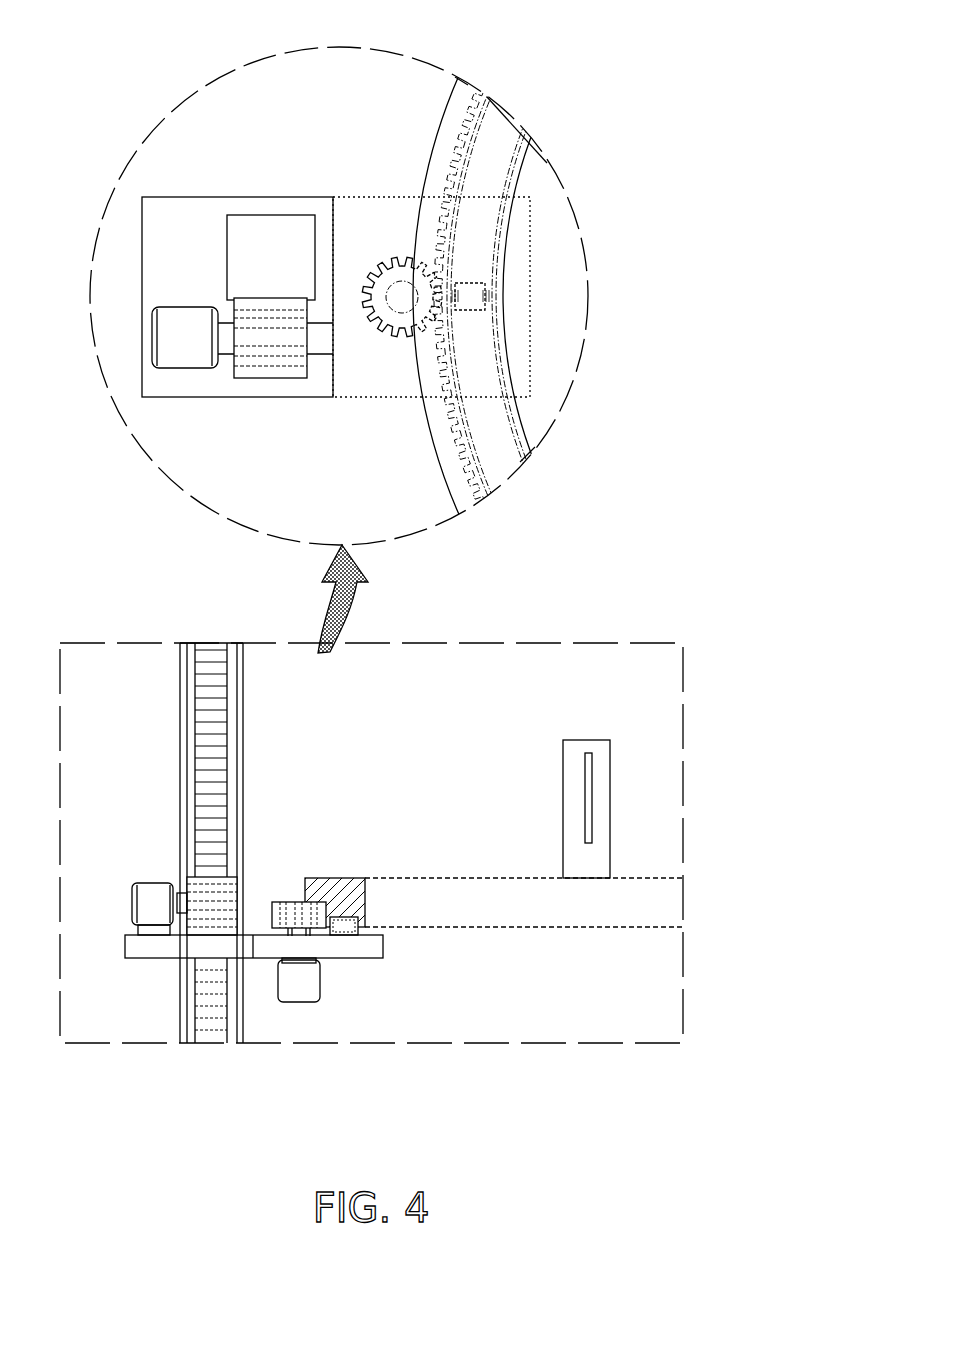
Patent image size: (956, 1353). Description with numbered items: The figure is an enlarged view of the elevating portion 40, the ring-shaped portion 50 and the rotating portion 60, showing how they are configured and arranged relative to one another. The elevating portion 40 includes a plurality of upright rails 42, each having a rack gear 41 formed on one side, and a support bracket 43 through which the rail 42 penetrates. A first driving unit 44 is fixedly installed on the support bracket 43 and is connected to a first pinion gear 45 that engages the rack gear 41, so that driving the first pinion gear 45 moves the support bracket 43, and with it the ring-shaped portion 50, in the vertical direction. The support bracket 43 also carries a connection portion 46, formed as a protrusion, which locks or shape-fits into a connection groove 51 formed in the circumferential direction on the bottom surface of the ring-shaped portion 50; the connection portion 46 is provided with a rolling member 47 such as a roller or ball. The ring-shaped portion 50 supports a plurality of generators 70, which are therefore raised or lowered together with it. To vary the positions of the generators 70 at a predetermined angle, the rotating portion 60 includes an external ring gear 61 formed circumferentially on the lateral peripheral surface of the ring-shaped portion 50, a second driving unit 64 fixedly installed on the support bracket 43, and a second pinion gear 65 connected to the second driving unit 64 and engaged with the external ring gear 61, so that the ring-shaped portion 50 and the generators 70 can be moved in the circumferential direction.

The elevating portion 40 is at (188, 226).
The rack gear 41 is at (218, 650).
The rail 42 is at (266, 230).
The support bracket 43 is at (235, 203).
The first driving unit 44 is at (192, 360).
The first pinion gear 45 is at (277, 362).
The connection portion 46 is at (362, 1094).
The rolling member 47 is at (352, 922).
The ring-shaped portion 50 is at (520, 183).
The connection groove 51 is at (518, 158).
The rotating portion 60 is at (393, 227).
The external ring gear 61 is at (472, 122).
The second driving unit 64 is at (295, 1004).
The second pinion gear 65 is at (391, 257).
The generator 70 is at (597, 748).